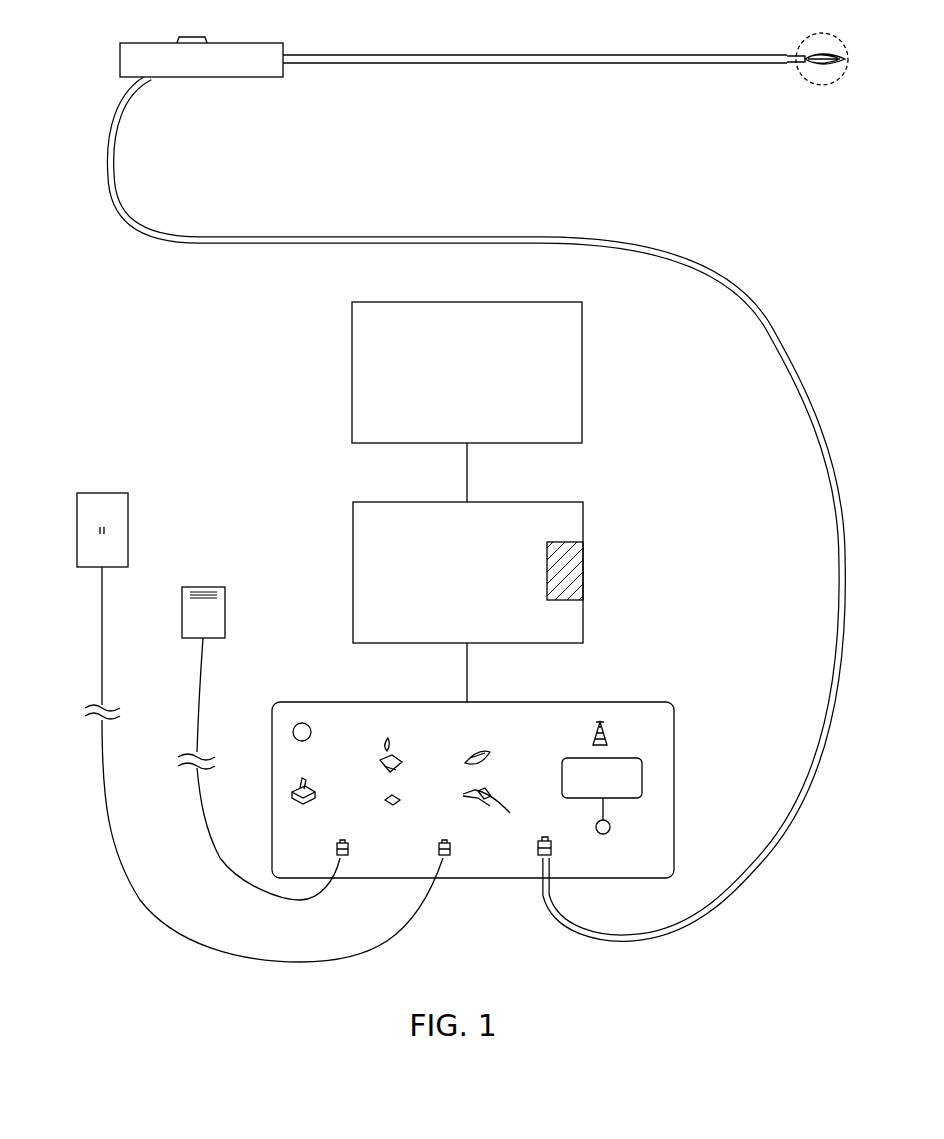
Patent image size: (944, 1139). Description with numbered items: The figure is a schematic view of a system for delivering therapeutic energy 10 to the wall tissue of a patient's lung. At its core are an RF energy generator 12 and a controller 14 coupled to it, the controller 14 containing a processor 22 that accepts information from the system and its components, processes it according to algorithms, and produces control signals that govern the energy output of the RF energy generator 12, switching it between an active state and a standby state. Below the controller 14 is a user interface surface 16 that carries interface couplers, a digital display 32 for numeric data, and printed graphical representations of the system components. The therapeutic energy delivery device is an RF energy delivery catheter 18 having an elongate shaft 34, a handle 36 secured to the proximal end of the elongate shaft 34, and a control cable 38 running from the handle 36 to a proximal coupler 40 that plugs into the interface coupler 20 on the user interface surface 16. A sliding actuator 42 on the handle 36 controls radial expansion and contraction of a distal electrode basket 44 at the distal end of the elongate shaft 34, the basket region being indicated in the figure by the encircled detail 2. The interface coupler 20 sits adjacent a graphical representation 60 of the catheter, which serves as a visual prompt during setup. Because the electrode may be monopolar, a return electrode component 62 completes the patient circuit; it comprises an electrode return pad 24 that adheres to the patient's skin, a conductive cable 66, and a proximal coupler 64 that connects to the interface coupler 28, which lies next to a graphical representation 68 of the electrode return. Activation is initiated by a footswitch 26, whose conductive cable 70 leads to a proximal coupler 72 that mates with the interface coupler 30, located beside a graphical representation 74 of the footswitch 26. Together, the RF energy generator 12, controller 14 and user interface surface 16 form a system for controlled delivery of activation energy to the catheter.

The distal tip detail region 2 is at (824, 32).
The system for delivering therapeutic energy 10 is at (249, 336).
The RF energy generator 12 is at (406, 302).
The controller 14 is at (498, 555).
The user interface surface 16 is at (471, 790).
The RF energy delivery catheter 18 is at (482, 64).
The interface coupler 20 is at (540, 840).
The processor 22 is at (581, 563).
The electrode return pad 24 is at (102, 492).
The footswitch 26 is at (203, 587).
The interface coupler 28 is at (447, 843).
The interface coupler 30 is at (338, 846).
The digital display 32 is at (642, 778).
The elongate shaft 34 is at (432, 64).
The handle 36 is at (263, 72).
The control cable 38 is at (712, 266).
The proximal coupler 40 is at (554, 856).
The sliding actuator 42 is at (204, 37).
The distal electrode basket 44 is at (822, 66).
The graphical representation of the energy delivery catheter 60 is at (470, 795).
The return electrode component 62 is at (100, 628).
The proximal coupler 64 is at (453, 856).
The conductive cable 66 is at (127, 873).
The graphical representation of the electrode return 68 is at (387, 797).
The conductive cable 70 is at (200, 800).
The proximal coupler 72 is at (350, 856).
The graphical representation of the footswitch 74 is at (293, 790).